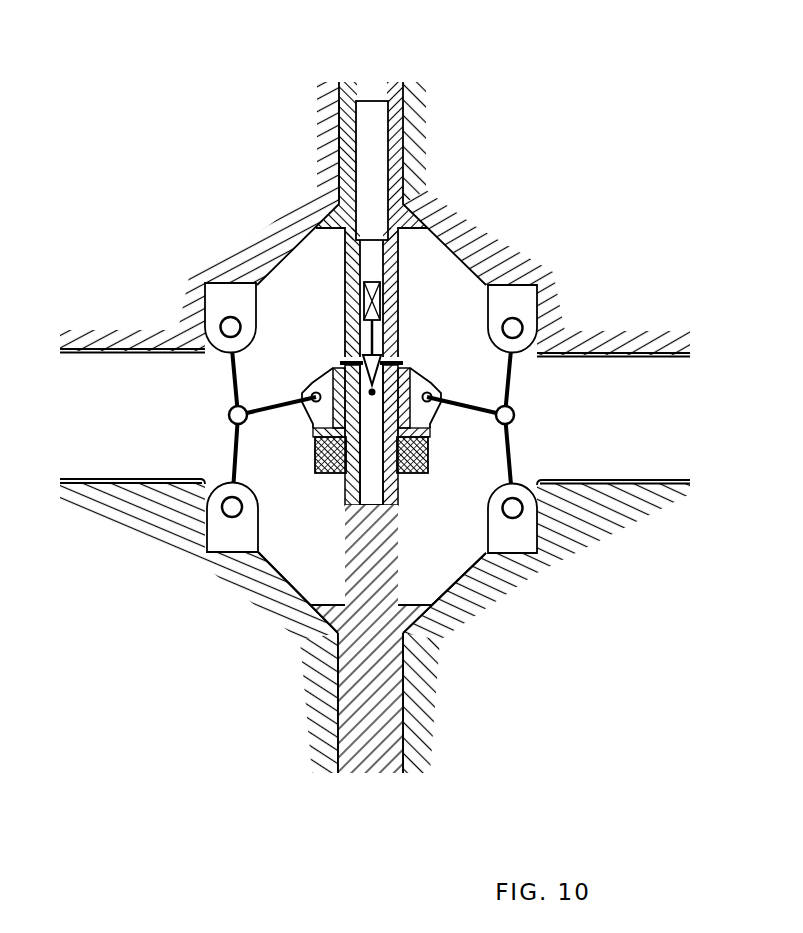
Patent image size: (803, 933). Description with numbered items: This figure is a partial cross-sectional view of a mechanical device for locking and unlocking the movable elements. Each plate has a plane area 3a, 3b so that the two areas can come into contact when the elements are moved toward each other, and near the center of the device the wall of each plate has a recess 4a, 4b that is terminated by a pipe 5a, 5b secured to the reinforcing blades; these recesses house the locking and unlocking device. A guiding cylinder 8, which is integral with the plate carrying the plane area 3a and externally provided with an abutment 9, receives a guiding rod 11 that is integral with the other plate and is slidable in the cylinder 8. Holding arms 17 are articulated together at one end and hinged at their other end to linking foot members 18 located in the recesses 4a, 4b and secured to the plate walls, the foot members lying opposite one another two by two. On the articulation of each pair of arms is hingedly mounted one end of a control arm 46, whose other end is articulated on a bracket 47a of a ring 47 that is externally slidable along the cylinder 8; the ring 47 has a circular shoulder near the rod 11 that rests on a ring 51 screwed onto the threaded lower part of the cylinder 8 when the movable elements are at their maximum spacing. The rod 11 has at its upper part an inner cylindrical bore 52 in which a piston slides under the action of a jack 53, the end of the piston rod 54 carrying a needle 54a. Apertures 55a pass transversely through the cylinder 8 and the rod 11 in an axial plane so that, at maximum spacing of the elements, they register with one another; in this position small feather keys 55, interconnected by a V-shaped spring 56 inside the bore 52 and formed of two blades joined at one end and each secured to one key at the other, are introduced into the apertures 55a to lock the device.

The plane area 3a is at (97, 332).
The plane area 3b is at (77, 493).
The recess 4a is at (292, 248).
The recess 4b is at (430, 440).
The pipe 5a is at (330, 137).
The pipe 5b is at (312, 712).
The guiding cylinder 8 is at (390, 83).
The abutment 9 is at (313, 237).
The guiding rod 11 is at (377, 732).
The holding arms 17 is at (633, 343).
The linking foot member 18 is at (222, 297).
The control arm 46 is at (262, 413).
The ring 47 is at (337, 360).
The bracket 47a is at (430, 440).
The ring 51 is at (486, 556).
The bore 52 is at (368, 252).
The jack 53 is at (374, 280).
The piston rod 54 is at (400, 315).
The needle 54a is at (400, 352).
The feather keys 55 is at (512, 335).
The apertures 55a is at (338, 360).
The V-shaped spring 56 is at (317, 480).